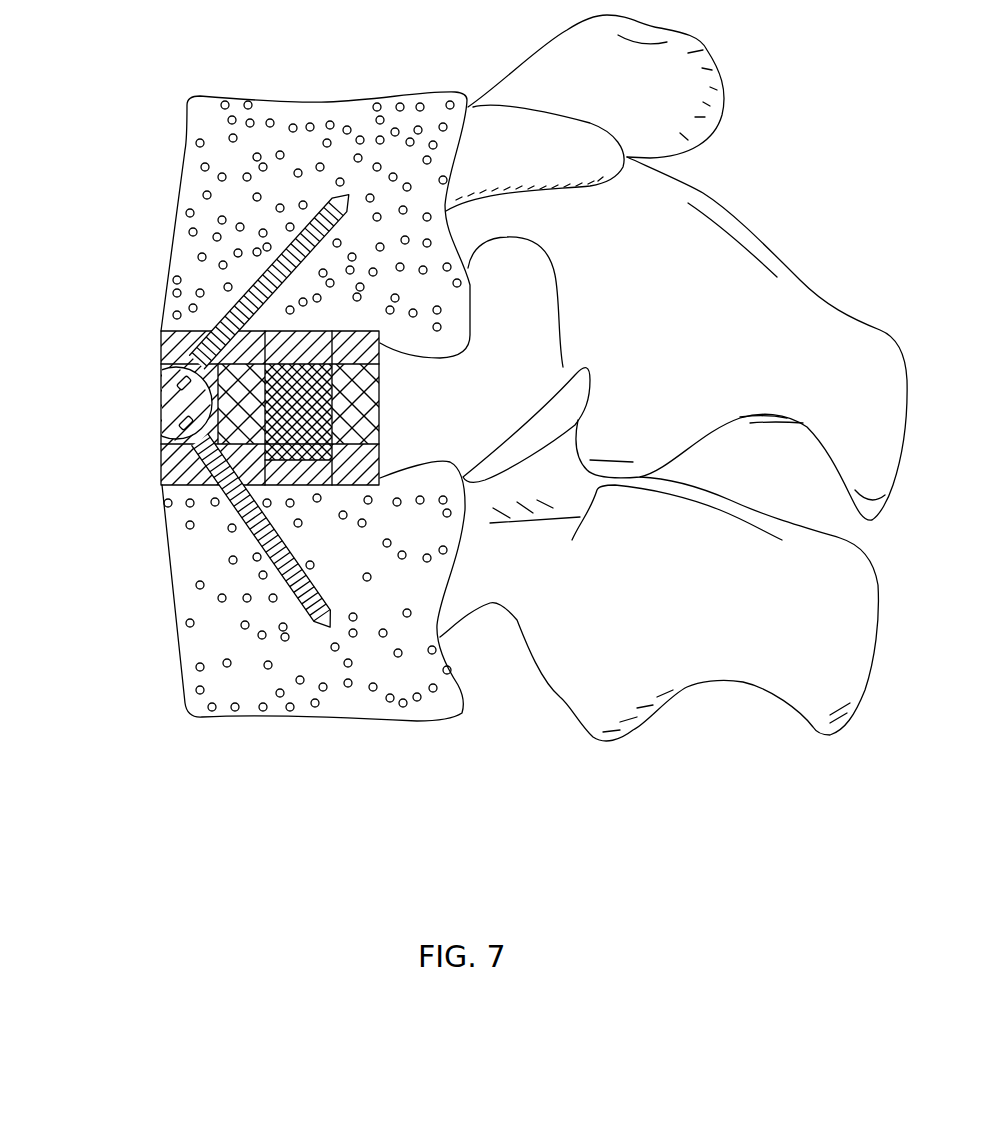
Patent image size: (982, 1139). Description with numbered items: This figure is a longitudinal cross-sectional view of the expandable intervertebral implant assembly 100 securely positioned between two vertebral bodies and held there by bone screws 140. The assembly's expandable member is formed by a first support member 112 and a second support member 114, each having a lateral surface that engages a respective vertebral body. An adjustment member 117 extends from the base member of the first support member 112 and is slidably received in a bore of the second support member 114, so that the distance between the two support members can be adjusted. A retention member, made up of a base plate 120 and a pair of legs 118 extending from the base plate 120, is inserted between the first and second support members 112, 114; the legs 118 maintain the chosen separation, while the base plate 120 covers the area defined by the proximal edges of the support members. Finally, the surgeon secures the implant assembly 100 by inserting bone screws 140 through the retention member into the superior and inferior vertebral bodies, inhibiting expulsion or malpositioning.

The expandable intervertebral implant assembly 100 is at (131, 477).
The first support member 112 is at (370, 345).
The second support member 114 is at (297, 478).
The adjustment member 117 is at (307, 403).
The legs 118 is at (372, 383).
The base plate 120 is at (172, 337).
The bone screw 140 is at (247, 480).